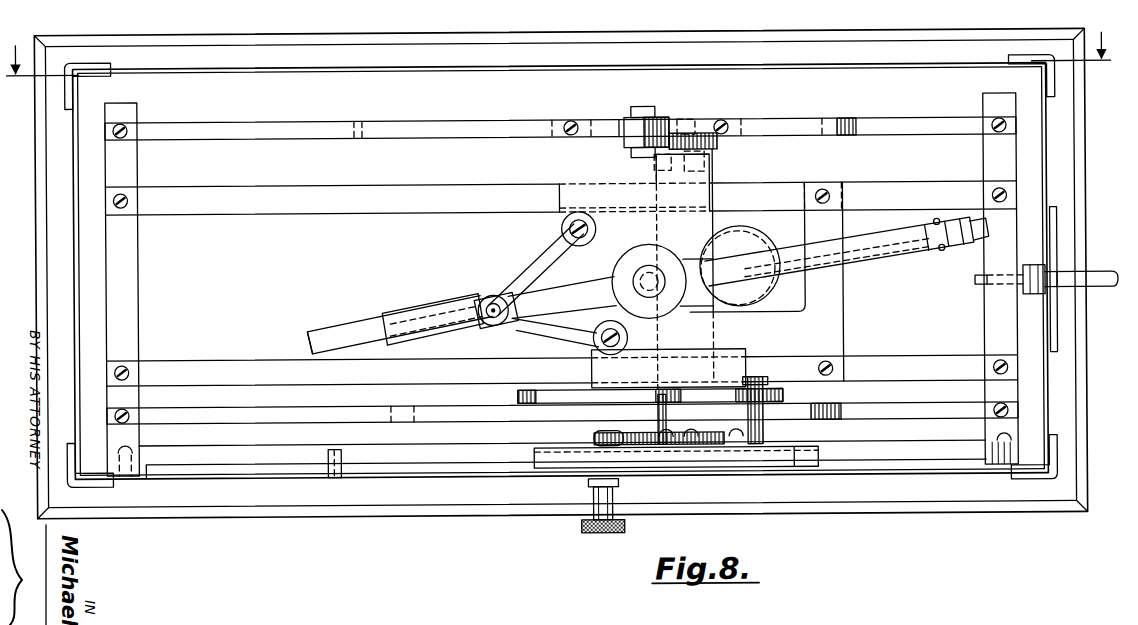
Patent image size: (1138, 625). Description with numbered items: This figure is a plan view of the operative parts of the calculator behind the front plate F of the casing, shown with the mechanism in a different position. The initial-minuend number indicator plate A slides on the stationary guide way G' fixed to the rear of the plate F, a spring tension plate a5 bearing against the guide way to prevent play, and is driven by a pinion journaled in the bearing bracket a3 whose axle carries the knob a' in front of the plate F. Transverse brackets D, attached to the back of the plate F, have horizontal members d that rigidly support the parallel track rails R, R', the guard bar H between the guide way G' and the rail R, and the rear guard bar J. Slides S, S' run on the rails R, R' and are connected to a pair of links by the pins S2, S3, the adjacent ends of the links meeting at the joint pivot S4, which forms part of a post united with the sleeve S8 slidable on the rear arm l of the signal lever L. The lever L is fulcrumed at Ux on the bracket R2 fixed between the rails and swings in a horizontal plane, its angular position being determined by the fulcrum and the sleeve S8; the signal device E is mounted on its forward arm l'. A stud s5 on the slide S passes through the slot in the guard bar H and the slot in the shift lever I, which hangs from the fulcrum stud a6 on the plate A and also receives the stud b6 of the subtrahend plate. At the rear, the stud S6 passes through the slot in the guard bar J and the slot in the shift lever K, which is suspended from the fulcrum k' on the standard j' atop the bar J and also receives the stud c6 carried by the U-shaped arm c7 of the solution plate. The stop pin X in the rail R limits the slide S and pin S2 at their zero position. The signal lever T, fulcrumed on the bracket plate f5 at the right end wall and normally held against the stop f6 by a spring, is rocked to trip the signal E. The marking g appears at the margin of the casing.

The gap dimension g is at (559, 51).
The transverse brackets D is at (118, 530).
The horizontal members d is at (984, 100).
The track rail R' is at (560, 198).
The track rail R is at (562, 371).
The guard bar J is at (886, 118).
The standard j' is at (606, 112).
The fulcrum k' is at (651, 117).
The shift lever K is at (722, 142).
The stud c6 is at (692, 125).
The stud S6 is at (657, 166).
The slide S' is at (598, 235).
The U-shaped arm c7 is at (685, 269).
The fulcrum Ux is at (648, 278).
The pin S3 is at (565, 228).
The pin S2 is at (621, 337).
The joint pivot S4 is at (484, 303).
The signal lever L is at (562, 298).
The slide S is at (555, 307).
The sleeve S8 is at (399, 324).
The rear arm l is at (316, 326).
The signal device E is at (740, 266).
The bracket R2 is at (765, 313).
The forward arm l' is at (847, 265).
The signal lever T is at (1105, 274).
The stop f6 is at (1063, 272).
The bracket plate f5 is at (1062, 292).
The stop pin X is at (452, 375).
The shift lever I is at (514, 396).
The fulcrum stud a6 is at (760, 382).
The stud b6 is at (655, 470).
The spring tension plate a5 is at (700, 447).
The stud s5 is at (735, 447).
The bearing bracket a3 is at (594, 439).
The initial-minuend number indicator plate A is at (538, 465).
The knob a' is at (583, 528).
The front plate F is at (312, 478).
The guide way G' is at (388, 503).
The guard bar H is at (213, 418).